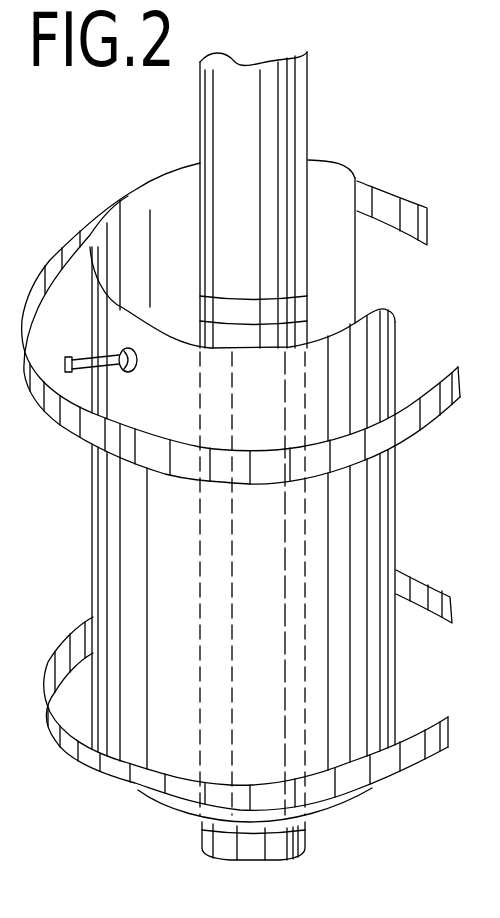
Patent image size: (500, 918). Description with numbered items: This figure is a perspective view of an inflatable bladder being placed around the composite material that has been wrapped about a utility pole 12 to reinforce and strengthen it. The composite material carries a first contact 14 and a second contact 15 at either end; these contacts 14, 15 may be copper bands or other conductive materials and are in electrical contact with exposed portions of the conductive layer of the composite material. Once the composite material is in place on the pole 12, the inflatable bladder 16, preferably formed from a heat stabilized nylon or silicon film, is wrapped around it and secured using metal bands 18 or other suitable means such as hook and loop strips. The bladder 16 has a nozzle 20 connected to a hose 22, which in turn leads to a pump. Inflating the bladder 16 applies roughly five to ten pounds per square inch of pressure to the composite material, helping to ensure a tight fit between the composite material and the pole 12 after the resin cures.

The utility pole 12 is at (290, 140).
The first contact 14 is at (244, 315).
The second contact 15 is at (306, 838).
The inflatable bladder 16 is at (380, 518).
The metal bands 18 is at (413, 209).
The nozzle 20 is at (138, 352).
The hose 22 is at (70, 358).